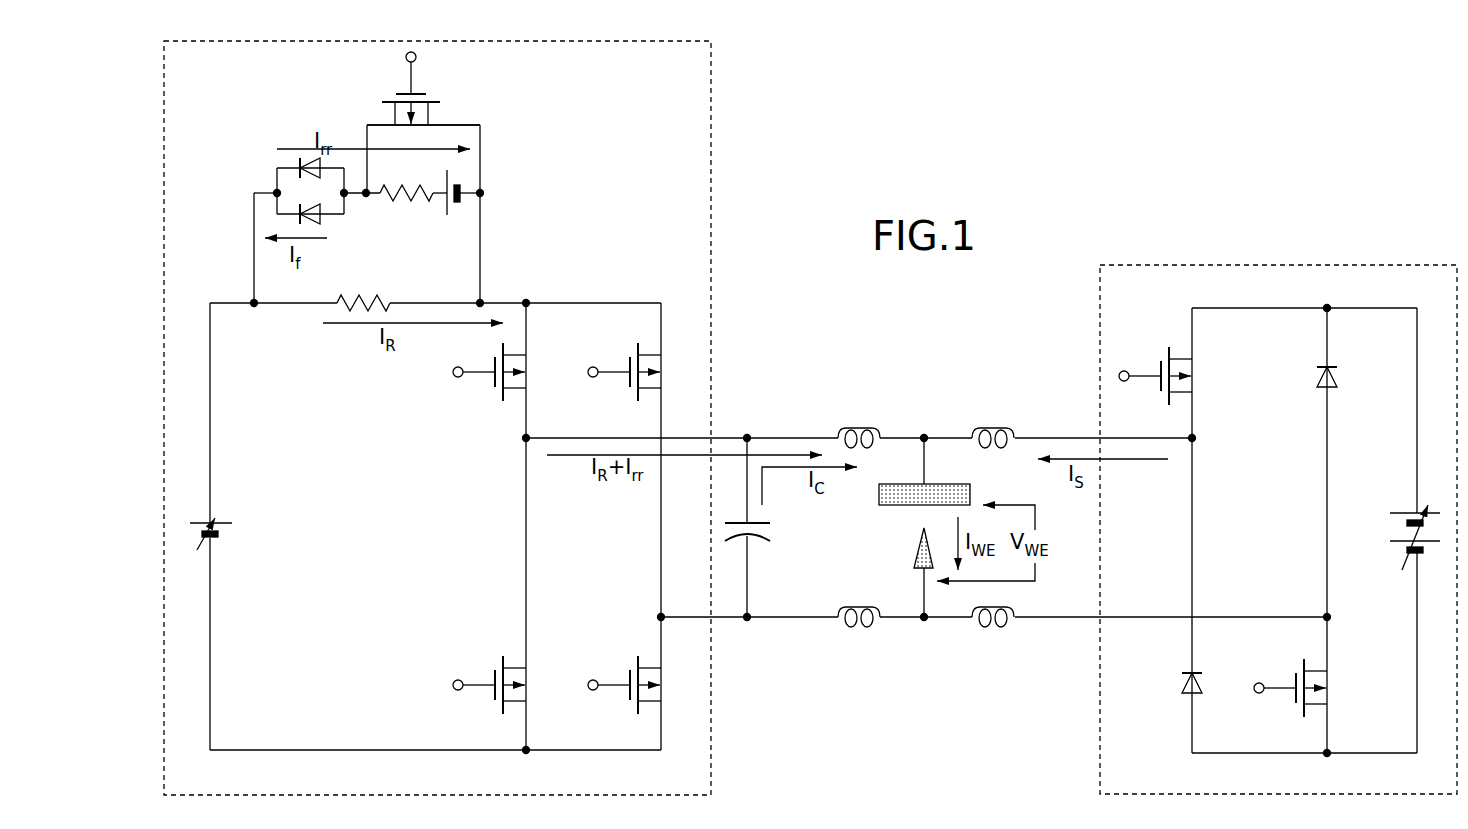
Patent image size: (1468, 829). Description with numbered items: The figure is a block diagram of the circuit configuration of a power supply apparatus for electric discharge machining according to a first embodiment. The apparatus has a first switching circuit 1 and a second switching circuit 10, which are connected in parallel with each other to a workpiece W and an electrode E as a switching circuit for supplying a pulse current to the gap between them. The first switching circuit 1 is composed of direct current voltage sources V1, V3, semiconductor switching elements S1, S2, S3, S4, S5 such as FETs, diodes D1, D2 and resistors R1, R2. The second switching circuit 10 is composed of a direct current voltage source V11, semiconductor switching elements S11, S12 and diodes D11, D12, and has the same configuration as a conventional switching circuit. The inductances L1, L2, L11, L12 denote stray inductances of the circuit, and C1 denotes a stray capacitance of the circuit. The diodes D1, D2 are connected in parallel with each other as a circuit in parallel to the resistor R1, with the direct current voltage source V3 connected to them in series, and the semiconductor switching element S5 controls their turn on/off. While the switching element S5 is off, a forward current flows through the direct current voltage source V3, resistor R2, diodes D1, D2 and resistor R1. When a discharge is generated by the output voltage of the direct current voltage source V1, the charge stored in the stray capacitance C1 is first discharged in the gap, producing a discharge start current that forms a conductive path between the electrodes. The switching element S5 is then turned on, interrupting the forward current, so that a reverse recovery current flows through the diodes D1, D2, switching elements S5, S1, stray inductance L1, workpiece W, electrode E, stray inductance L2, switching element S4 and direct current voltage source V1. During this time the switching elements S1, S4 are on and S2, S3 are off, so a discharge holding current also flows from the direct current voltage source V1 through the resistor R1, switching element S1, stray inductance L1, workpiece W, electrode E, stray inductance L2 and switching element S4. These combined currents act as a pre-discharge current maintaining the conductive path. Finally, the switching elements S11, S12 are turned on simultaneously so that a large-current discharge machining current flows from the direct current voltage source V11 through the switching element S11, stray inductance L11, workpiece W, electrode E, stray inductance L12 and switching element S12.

The first switching circuit 1 is at (711, 333).
The second switching circuit 10 is at (1100, 312).
The semiconductor switching element S1 is at (526, 372).
The semiconductor switching element S2 is at (526, 685).
The semiconductor switching element S3 is at (661, 372).
The semiconductor switching element S4 is at (661, 685).
The semiconductor switching element S5 is at (436, 116).
The semiconductor switching element S11 is at (1192, 370).
The semiconductor switching element S12 is at (1324, 686).
The diode D1 is at (296, 163).
The diode D2 is at (328, 221).
The diode D11 is at (1338, 372).
The diode D12 is at (1203, 684).
The resistor R1 is at (336, 306).
The resistor R2 is at (405, 200).
The direct current voltage source V1 is at (224, 522).
The direct current voltage source V3 is at (456, 174).
The direct current voltage source V11 is at (1397, 528).
The stray capacitance C1 is at (772, 526).
The stray inductance L1 is at (868, 427).
The stray inductance L2 is at (860, 627).
The stray inductance L11 is at (1000, 427).
The stray inductance L12 is at (994, 627).
The workpiece W is at (971, 492).
The electrode E is at (914, 553).